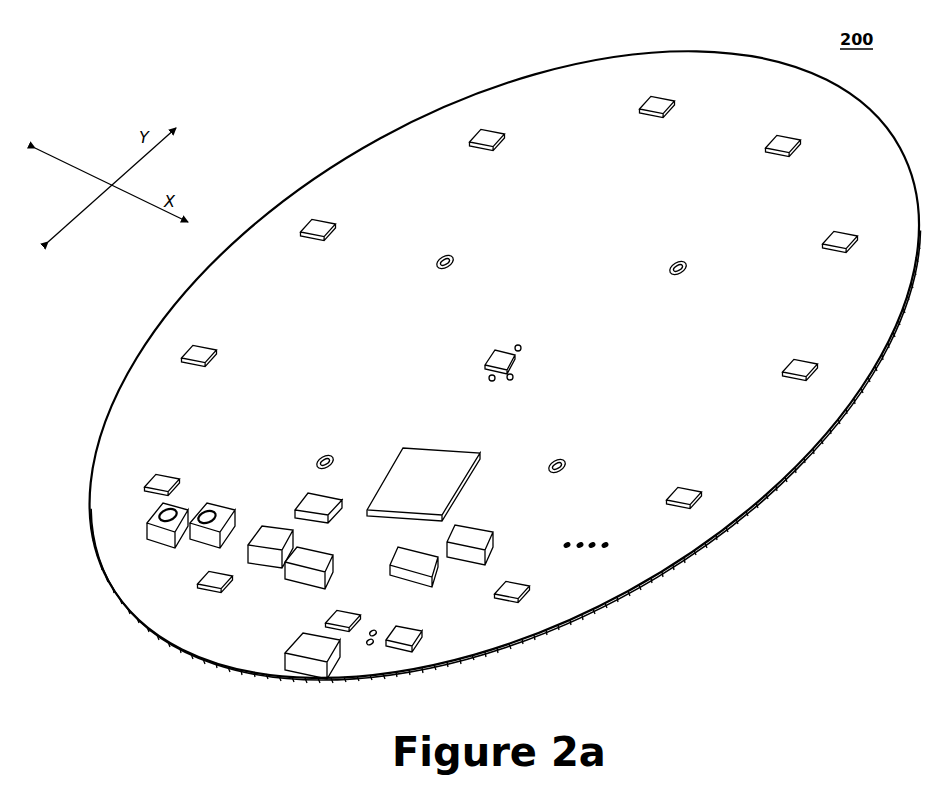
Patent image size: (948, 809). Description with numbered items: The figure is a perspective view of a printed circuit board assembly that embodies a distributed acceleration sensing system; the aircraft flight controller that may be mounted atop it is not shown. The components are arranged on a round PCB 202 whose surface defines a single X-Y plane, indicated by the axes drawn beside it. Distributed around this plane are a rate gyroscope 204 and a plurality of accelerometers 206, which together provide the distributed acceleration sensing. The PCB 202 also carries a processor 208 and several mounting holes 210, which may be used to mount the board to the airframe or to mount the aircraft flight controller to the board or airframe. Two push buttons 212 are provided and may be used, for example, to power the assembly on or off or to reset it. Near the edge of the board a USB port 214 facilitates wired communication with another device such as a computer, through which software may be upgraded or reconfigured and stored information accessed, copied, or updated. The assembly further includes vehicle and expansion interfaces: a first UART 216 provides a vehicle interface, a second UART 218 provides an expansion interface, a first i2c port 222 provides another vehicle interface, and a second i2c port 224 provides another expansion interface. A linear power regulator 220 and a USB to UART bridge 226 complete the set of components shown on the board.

The PCB 202 is at (397, 122).
The rate gyroscope 204 is at (487, 367).
The accelerometers 206 is at (480, 153).
The processor 208 is at (440, 452).
The mounting holes 210 is at (451, 256).
The push buttons 212 is at (178, 504).
The USB port 214 is at (303, 668).
The first UART 216 is at (262, 568).
The second UART 218 is at (300, 590).
The linear power regulator 220 is at (301, 496).
The first i2c port 222 is at (391, 562).
The second i2c port 224 is at (497, 540).
The USB to UART bridge 226 is at (420, 652).